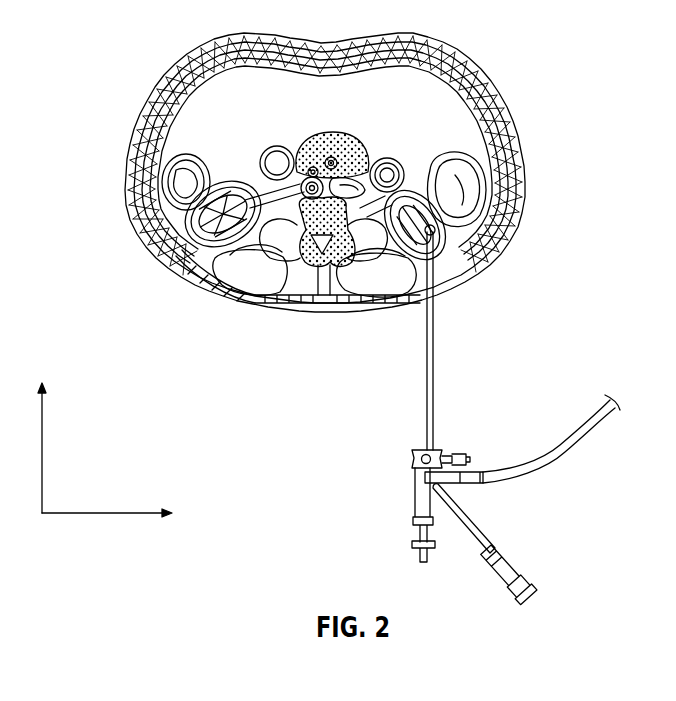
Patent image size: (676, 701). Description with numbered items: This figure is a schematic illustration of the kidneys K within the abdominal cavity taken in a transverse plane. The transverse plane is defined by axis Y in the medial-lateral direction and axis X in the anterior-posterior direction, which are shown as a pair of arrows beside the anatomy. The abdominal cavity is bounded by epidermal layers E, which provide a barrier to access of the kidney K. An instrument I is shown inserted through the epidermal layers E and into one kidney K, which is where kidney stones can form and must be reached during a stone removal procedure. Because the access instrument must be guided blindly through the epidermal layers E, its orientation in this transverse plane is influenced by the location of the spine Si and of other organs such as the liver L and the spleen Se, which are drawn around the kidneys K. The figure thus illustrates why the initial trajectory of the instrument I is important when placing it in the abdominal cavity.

The spleen Se is at (173, 180).
The kidney K is at (192, 217).
The epidermal layers E is at (522, 150).
The liver L is at (470, 197).
The spine Si is at (323, 263).
The instrument I is at (425, 368).
The axis X is at (41, 435).
The axis Y is at (118, 514).